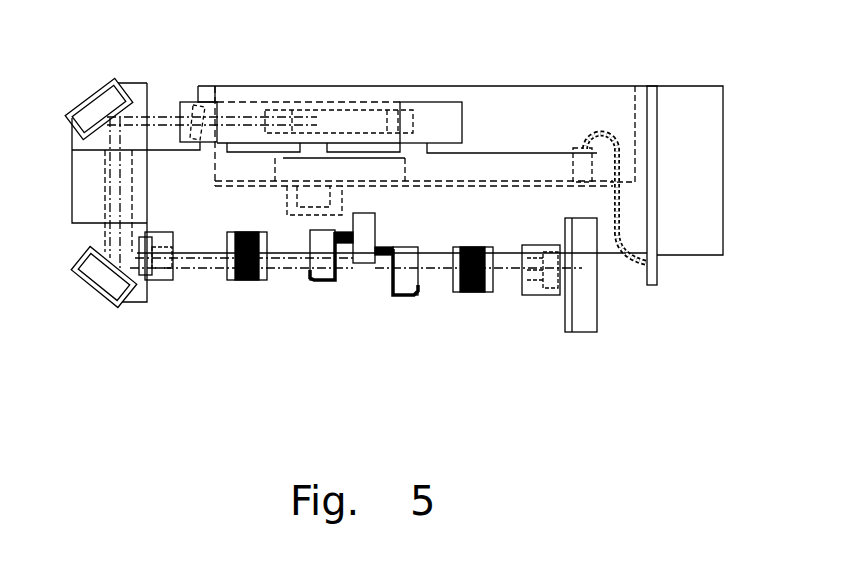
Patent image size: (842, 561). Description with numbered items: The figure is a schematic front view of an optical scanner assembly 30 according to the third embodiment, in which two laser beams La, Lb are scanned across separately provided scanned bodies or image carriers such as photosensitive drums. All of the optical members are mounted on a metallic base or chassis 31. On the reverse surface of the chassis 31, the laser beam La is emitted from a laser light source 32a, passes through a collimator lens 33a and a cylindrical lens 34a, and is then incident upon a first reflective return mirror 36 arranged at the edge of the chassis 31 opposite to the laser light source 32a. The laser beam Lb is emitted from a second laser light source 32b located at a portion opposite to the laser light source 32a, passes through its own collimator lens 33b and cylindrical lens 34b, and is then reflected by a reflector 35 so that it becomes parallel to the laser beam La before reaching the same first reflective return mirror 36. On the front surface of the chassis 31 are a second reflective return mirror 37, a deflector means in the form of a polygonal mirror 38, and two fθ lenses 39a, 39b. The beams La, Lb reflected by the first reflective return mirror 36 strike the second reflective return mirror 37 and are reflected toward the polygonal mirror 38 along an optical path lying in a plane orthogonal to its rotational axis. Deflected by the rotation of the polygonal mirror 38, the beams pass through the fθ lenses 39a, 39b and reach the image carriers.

The optical scanner assembly 30 is at (586, 59).
The chassis 31 is at (520, 163).
The laser light source 32a is at (532, 274).
The laser light source 32b is at (162, 268).
The collimator lens 33a is at (470, 290).
The collimator lens 33b is at (262, 283).
The cylindrical lens 34a is at (407, 292).
The cylindrical lens 34b is at (320, 272).
The reflector 35 is at (361, 262).
The first reflective return mirror 36 is at (84, 290).
The second reflective return mirror 37 is at (122, 90).
The polygonal mirror 38 is at (327, 115).
The fθ lens 39a is at (247, 115).
The fθ lens 39b is at (442, 110).
The laser beam La is at (508, 272).
The laser beam Lb is at (193, 268).